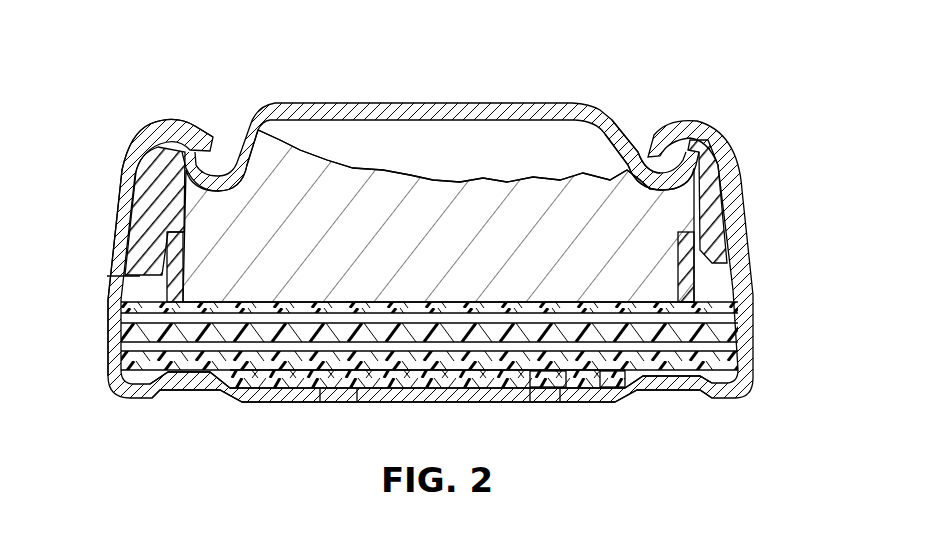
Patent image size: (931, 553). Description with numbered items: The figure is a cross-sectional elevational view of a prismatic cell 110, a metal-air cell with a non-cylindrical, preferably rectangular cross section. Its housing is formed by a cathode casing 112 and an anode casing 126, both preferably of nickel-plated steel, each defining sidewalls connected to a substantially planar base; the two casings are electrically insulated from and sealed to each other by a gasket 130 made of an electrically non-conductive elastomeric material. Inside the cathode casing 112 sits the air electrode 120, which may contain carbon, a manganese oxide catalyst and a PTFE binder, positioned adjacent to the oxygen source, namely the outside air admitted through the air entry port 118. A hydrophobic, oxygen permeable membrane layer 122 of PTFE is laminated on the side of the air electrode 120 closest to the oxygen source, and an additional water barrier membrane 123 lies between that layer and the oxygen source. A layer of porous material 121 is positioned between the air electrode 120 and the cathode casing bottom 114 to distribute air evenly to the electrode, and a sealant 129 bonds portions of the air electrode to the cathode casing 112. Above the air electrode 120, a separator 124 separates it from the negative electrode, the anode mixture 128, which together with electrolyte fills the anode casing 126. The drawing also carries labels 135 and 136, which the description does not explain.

The prismatic cell 110 is at (252, 99).
The cathode casing 112 is at (128, 167).
The cathode casing bottom 114 is at (280, 394).
The air entry port 118 is at (337, 394).
The air electrode 120 is at (725, 332).
The layer of porous material 121 is at (543, 383).
The hydrophobic oxygen permeable membrane layer 122 is at (733, 346).
The water barrier membrane 123 is at (716, 366).
The separator 124 is at (432, 300).
The anode casing 126 is at (360, 101).
The anode mixture 128 is at (408, 190).
The sealant 129 is at (183, 394).
The gasket 130 is at (720, 211).
The insulating ring 135 is at (140, 272).
The cover edge bend 136 is at (640, 176).